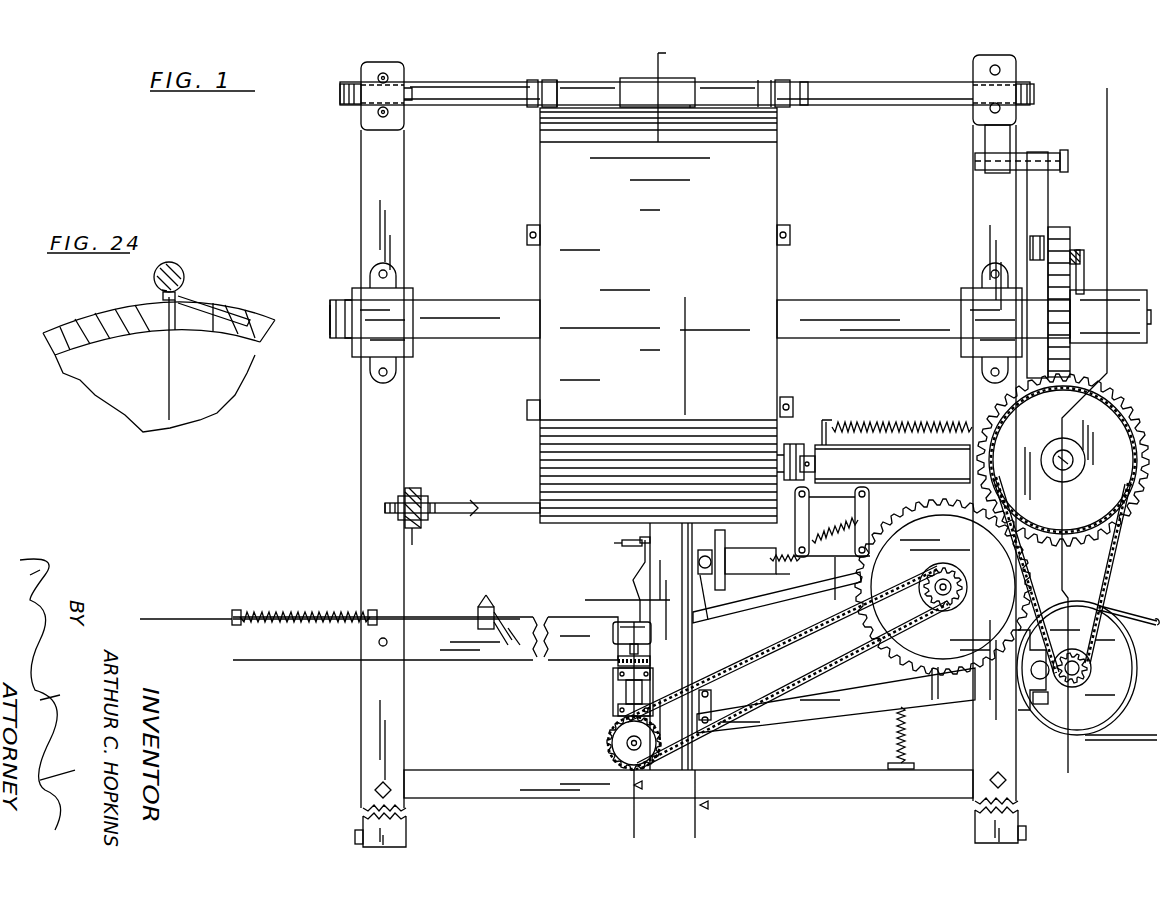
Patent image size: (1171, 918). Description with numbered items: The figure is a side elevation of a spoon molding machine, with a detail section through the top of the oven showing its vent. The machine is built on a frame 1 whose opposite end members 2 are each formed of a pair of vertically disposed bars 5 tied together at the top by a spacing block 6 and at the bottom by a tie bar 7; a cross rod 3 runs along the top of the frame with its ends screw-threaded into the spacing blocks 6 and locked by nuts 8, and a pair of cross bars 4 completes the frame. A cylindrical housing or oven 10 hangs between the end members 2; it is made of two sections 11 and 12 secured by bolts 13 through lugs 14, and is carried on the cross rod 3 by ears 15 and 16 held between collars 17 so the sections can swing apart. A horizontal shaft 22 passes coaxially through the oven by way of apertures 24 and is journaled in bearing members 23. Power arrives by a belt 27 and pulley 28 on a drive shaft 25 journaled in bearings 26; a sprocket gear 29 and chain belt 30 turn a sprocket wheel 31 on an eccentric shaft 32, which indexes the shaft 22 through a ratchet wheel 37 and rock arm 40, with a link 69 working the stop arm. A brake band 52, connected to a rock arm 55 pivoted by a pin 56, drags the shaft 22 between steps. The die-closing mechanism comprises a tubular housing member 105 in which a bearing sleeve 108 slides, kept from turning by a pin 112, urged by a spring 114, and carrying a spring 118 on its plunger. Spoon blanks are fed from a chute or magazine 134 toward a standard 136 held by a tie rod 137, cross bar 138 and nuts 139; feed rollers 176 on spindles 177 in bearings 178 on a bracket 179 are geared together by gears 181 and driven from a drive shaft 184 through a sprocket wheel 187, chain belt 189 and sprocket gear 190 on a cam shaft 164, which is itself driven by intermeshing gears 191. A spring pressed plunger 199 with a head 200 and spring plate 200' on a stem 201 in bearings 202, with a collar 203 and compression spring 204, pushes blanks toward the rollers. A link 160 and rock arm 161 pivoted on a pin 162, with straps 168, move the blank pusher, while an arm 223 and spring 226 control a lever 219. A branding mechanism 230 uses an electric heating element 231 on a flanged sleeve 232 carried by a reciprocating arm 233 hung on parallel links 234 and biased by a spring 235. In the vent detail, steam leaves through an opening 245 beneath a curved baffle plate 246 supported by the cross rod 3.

In FIG. 1, the frame 1 is at (405, 112).
In FIG. 1, the end members 2 is at (405, 199).
In FIG. 1, the cross rod 3 is at (862, 98).
In FIG. 24, the cross rod 3 is at (184, 282).
In FIG. 1, the cross bars 4 is at (808, 800).
In FIG. 1, the vertically disposed bars 5 is at (400, 434).
In FIG. 1, the spacing block 6 is at (368, 115).
In FIG. 1, the tie bar 7 is at (355, 836).
In FIG. 1, the nuts 8 is at (366, 88).
In FIG. 1, the cylindrical housing or oven 10 is at (793, 198).
In FIG. 24, the cylindrical housing or oven 10 is at (184, 412).
In FIG. 1, the housing section 11 is at (658, 315).
In FIG. 24, the housing section 11 is at (88, 404).
In FIG. 24, the housing section 12 is at (232, 380).
In FIG. 1, the bolts 13 is at (530, 240).
In FIG. 1, the lugs 14 is at (786, 246).
In FIG. 1, the ears 15 is at (548, 84).
In FIG. 1, the ears 16 is at (560, 86).
In FIG. 1, the collars 17 is at (532, 86).
In FIG. 1, the shaft 22 is at (862, 318).
In FIG. 1, the bearing members 23 is at (410, 298).
In FIG. 1, the apertures 24 is at (657, 104).
In FIG. 1, the drive shaft 25 is at (1085, 676).
In FIG. 1, the bearings 26 is at (1046, 702).
In FIG. 1, the belt 27 is at (1147, 744).
In FIG. 1, the pulley 28 is at (1115, 705).
In FIG. 1, the sprocket gear 29 is at (1080, 664).
In FIG. 1, the chain belt 30 is at (1105, 570).
In FIG. 1, the sprocket wheel 31 is at (1063, 460).
In FIG. 1, the eccentric shaft 32 is at (1074, 466).
In FIG. 1, the ratchet wheel 37 is at (1060, 228).
In FIG. 1, the rock arm 40 is at (1080, 262).
In FIG. 1, the brake band 52 is at (1040, 293).
In FIG. 1, the rock arm 55 is at (1046, 188).
In FIG. 1, the pin 56 is at (1016, 152).
In FIG. 1, the link 69 is at (1068, 260).
In FIG. 1, the tubular housing member 105 is at (892, 464).
In FIG. 1, the bearing sleeve 108 is at (829, 465).
In FIG. 1, the pin 112 is at (822, 428).
In FIG. 1, the spring 114 is at (896, 420).
In FIG. 1, the spring 118 is at (792, 446).
In FIG. 1, the chute or magazine 134 is at (302, 660).
In FIG. 1, the standard 136 is at (622, 541).
In FIG. 1, the tie rod 137 is at (478, 514).
In FIG. 1, the cross bar 138 is at (422, 528).
In FIG. 1, the nuts 139 is at (421, 502).
In FIG. 1, the link 160 is at (711, 694).
In FIG. 1, the rock arm 161 is at (835, 710).
In FIG. 1, the pin 162 is at (1030, 678).
In FIG. 1, the cam shaft 164 is at (950, 590).
In FIG. 1, the straps 168 is at (930, 690).
In FIG. 1, the feed rollers 176 is at (612, 634).
In FIG. 1, the spindles 177 is at (638, 652).
In FIG. 1, the bearings 178 is at (618, 676).
In FIG. 1, the bracket 179 is at (613, 700).
In FIG. 1, the gears 181 is at (618, 662).
In FIG. 1, the drive shaft 184 is at (622, 744).
In FIG. 1, the sprocket wheel 187 is at (620, 760).
In FIG. 1, the chain belt 189 is at (775, 648).
In FIG. 1, the sprocket gear 190 is at (946, 582).
In FIG. 1, the intermeshing gears 191 is at (1004, 587).
In FIG. 1, the spring pressed plunger 199 is at (486, 607).
In FIG. 1, the head 200 is at (492, 650).
In FIG. 1, the spring plate 200' is at (531, 658).
In FIG. 1, the rod or stem 201 is at (438, 612).
In FIG. 1, the bearings 202 is at (236, 610).
In FIG. 1, the collar 203 is at (374, 610).
In FIG. 1, the compression spring 204 is at (305, 602).
In FIG. 1, the lever 219 is at (640, 566).
In FIG. 1, the arm 223 is at (750, 612).
In FIG. 1, the spring 226 is at (906, 724).
In FIG. 1, the branding or stamping mechanism 230 is at (776, 566).
In FIG. 1, the electric heating element 231 is at (720, 612).
In FIG. 1, the flanged sleeve 232 is at (746, 568).
In FIG. 1, the reciprocating arm 233 is at (832, 582).
In FIG. 1, the parallel links 234 is at (810, 546).
In FIG. 1, the spring 235 is at (862, 520).
In FIG. 24, the opening 245 is at (197, 322).
In FIG. 1, the curved baffle plate 246 is at (688, 106).
In FIG. 24, the curved baffle plate 246 is at (214, 303).